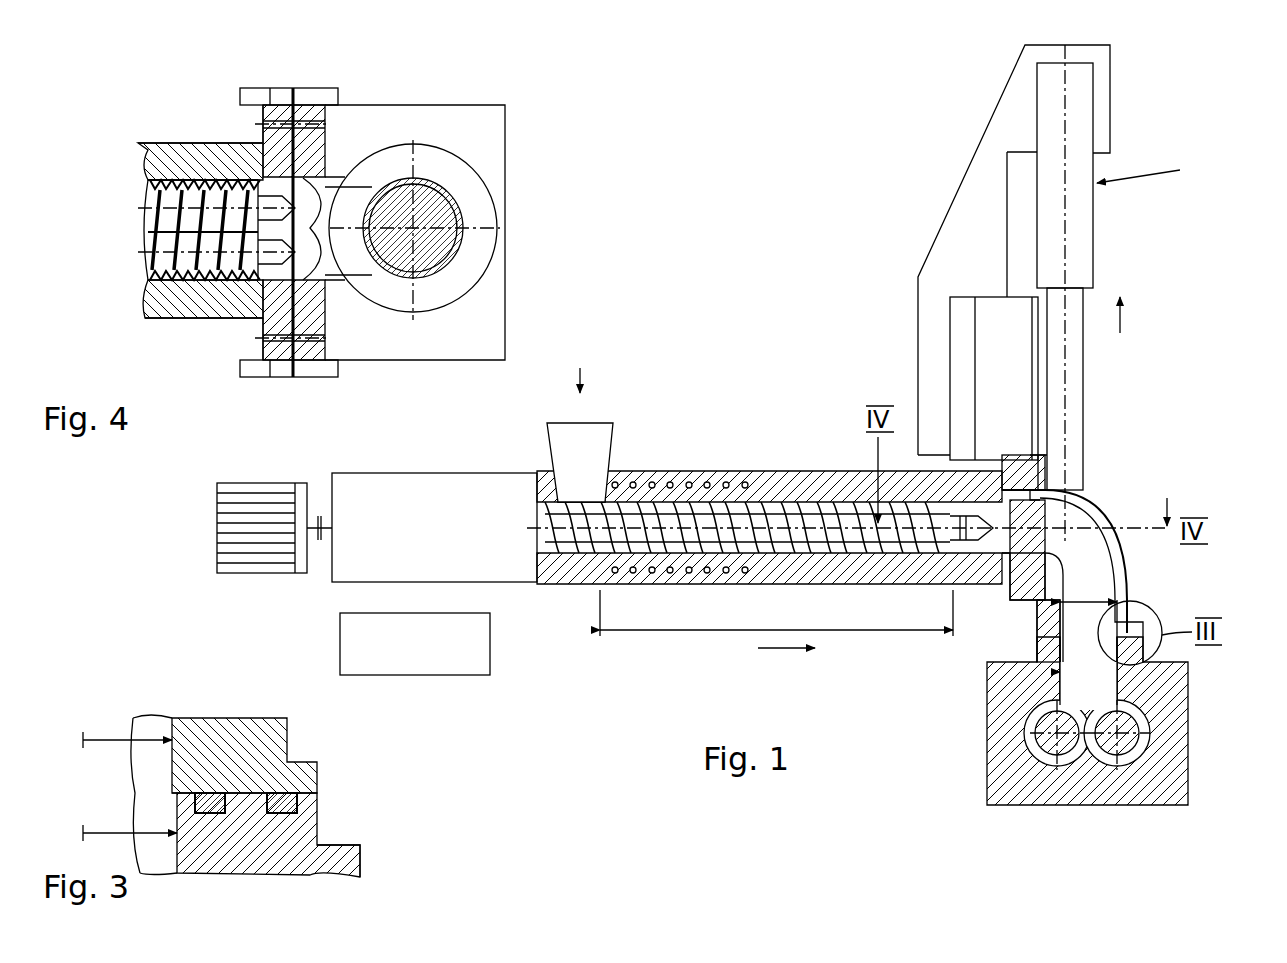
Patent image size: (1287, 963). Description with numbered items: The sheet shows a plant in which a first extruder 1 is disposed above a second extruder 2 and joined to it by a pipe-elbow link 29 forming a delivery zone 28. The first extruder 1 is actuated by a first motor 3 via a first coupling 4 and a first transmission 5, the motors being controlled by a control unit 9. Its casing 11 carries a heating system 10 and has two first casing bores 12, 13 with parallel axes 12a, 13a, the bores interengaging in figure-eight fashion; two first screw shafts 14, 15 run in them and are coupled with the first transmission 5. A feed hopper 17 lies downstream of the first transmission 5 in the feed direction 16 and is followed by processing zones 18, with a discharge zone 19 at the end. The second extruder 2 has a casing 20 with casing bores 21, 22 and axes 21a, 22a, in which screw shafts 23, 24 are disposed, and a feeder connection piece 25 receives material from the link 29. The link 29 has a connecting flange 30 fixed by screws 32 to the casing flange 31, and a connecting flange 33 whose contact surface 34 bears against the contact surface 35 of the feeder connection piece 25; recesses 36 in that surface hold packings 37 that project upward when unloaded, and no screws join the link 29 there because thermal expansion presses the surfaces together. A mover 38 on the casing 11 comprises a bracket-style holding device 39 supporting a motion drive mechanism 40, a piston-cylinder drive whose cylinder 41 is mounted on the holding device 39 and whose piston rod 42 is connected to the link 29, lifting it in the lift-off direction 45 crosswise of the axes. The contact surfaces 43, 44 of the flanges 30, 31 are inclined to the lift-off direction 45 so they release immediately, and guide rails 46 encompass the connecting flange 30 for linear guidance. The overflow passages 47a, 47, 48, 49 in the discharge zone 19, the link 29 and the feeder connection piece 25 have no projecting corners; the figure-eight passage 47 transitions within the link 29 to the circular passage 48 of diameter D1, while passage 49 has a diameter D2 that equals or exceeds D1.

In FIG. 4, the first extruder 1 is at (152, 140).
In FIG. 1, the first extruder 1 is at (677, 468).
In FIG. 1, the second extruder 2 is at (1195, 685).
In FIG. 1, the first motor 3 is at (258, 568).
In FIG. 1, the first coupling 4 is at (318, 540).
In FIG. 1, the first transmission 5 is at (520, 570).
In FIG. 1, the control unit 9 is at (490, 645).
In FIG. 1, the heating system 10 is at (635, 484).
In FIG. 4, the casing 11 is at (175, 305).
In FIG. 1, the casing 11 is at (566, 586).
In FIG. 4, the first casing bore 12 is at (215, 275).
In FIG. 1, the first casing bore 12 is at (787, 508).
In FIG. 4, the axis 12a is at (150, 262).
In FIG. 1, the axis 12a is at (742, 528).
In FIG. 4, the first casing bore 13 is at (185, 175).
In FIG. 4, the axis 13a is at (150, 205).
In FIG. 4, the first screw shaft 14 is at (150, 288).
In FIG. 1, the first screw shaft 14 is at (826, 520).
In FIG. 4, the first screw shaft 15 is at (200, 200).
In FIG. 1, the feed direction 16 is at (790, 652).
In FIG. 1, the feed hopper 17 is at (560, 432).
In FIG. 1, the processing zone 18 is at (776, 613).
In FIG. 1, the discharge zone 19 is at (955, 433).
In FIG. 1, the casing 20 is at (1000, 760).
In FIG. 1, the casing bore 21 is at (1030, 732).
In FIG. 1, the axis 21a is at (1000, 790).
In FIG. 1, the casing bore 22 is at (1160, 755).
In FIG. 1, the axis 22a is at (1135, 740).
In FIG. 1, the screw shaft 23 is at (1050, 705).
In FIG. 1, the screw shaft 24 is at (1135, 725).
In FIG. 1, the feeder connection piece 25 is at (1035, 650).
In FIG. 3, the feeder connection piece 25 is at (345, 862).
In FIG. 1, the delivery zone 28 is at (1130, 505).
In FIG. 4, the link 29 is at (470, 195).
In FIG. 1, the link 29 is at (1092, 512).
In FIG. 3, the link 29 is at (295, 742).
In FIG. 4, the connecting flange 30 is at (320, 150).
In FIG. 1, the connecting flange 30 is at (1040, 470).
In FIG. 4, the casing flange 31 is at (278, 345).
In FIG. 4, the screws 32 is at (322, 123).
In FIG. 1, the connecting flange 33 is at (1125, 620).
In FIG. 3, the connecting flange 33 is at (312, 770).
In FIG. 3, the contact surface 34 is at (235, 790).
In FIG. 3, the contact surface 35 is at (245, 813).
In FIG. 3, the recesses 36 is at (300, 808).
In FIG. 3, the packings 37 is at (185, 790).
In FIG. 1, the mover 38 is at (965, 162).
In FIG. 1, the holding device 39 is at (965, 210).
In FIG. 1, the motion drive mechanism 40 is at (1164, 170).
In FIG. 1, the cylinder 41 is at (1083, 252).
In FIG. 1, the piston rod 42 is at (1078, 387).
In FIG. 4, the contact surface 43 is at (265, 320).
In FIG. 4, the contact surface 44 is at (340, 290).
In FIG. 1, the lift-off direction 45 is at (1120, 317).
In FIG. 4, the guide rails 46 is at (298, 90).
In FIG. 1, the guide rails 46 is at (980, 352).
In FIG. 4, the overflow passage 47 is at (330, 178).
In FIG. 1, the overflow passage 47 is at (1030, 480).
In FIG. 4, the overflow passage 47a is at (300, 170).
In FIG. 1, the overflow passage 47a is at (993, 575).
In FIG. 4, the overflow passage 48 is at (430, 236).
In FIG. 1, the overflow passage 48 is at (1113, 580).
In FIG. 1, the overflow passage 49 is at (1060, 680).
In FIG. 1, the diameter D1 is at (1088, 588).
In FIG. 3, the diameter D1 is at (127, 729).
In FIG. 1, the diameter D2 is at (1088, 658).
In FIG. 3, the diameter D2 is at (130, 822).